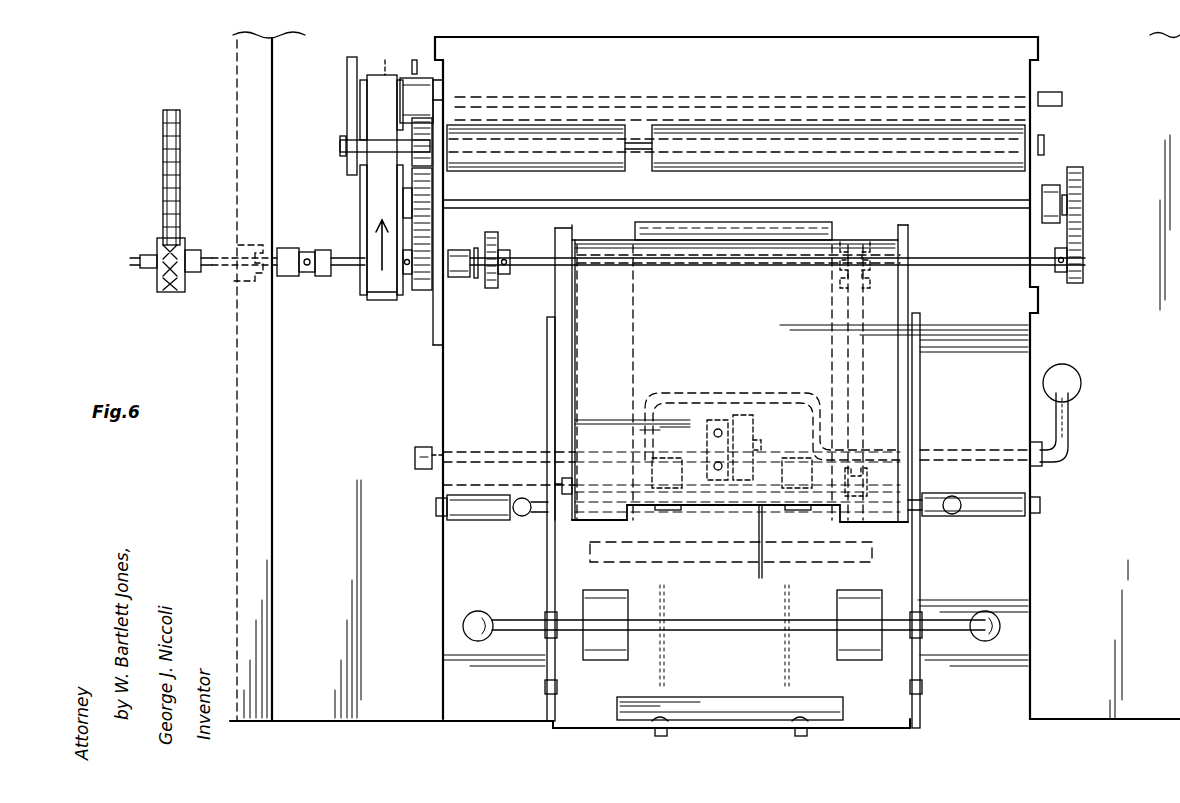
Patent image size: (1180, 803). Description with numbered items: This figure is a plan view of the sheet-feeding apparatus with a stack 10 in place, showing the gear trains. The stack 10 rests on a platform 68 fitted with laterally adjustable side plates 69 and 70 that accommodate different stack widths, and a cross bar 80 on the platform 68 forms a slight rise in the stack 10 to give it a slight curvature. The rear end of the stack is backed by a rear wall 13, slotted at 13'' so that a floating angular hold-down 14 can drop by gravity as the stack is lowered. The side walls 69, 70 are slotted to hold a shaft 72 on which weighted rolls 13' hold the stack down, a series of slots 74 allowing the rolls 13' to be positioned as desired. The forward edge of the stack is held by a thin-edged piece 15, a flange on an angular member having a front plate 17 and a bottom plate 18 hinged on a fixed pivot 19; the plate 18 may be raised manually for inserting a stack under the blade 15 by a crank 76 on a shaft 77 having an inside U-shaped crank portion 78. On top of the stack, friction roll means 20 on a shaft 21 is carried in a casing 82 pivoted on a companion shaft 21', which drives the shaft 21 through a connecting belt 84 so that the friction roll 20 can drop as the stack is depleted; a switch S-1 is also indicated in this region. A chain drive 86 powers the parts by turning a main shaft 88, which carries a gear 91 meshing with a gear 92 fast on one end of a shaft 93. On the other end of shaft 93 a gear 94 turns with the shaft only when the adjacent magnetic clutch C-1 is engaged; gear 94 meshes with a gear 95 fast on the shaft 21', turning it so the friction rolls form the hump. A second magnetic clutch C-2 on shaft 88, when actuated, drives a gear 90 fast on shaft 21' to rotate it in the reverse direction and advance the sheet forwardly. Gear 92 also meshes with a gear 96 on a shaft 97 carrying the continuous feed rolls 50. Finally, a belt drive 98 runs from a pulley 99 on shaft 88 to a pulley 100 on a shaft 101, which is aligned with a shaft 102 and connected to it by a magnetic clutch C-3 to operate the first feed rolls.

The stack 10 is at (905, 600).
The rear wall 13 is at (731, 742).
The weighted rolls 13' is at (733, 611).
The slot 13'' is at (734, 736).
The floating angular member 14 is at (727, 704).
The thin-edged piece 15 is at (802, 236).
The front plate 17 is at (777, 222).
The bottom plate 18 is at (632, 361).
The fixed pivot 19 is at (1040, 503).
The friction roll means 20 is at (790, 458).
The shaft 21 is at (495, 483).
The companion shaft 21' is at (777, 280).
The continuous feed rolls 50 is at (740, 160).
The platform 68 is at (1020, 553).
The side plate 69 is at (921, 556).
The side plate 70 is at (535, 519).
The shaft 72 is at (748, 623).
The series of slots 74 is at (546, 613).
The crank 76 is at (1069, 410).
The shaft 77 is at (962, 453).
The U-shaped crank portion 78 is at (724, 393).
The cross bar 80 is at (715, 566).
The casing 82 is at (888, 408).
The connecting belt 84 is at (862, 370).
The chain 86 is at (163, 163).
The main shaft 88 is at (340, 254).
The gear 90 is at (498, 243).
The gear 91 is at (421, 292).
The gear 92 is at (432, 192).
The shaft 93 is at (545, 178).
The gear 94 is at (1083, 182).
The gear 95 is at (1085, 260).
The gear 96 is at (430, 129).
The shaft 97 is at (640, 160).
The belt drive 98 is at (382, 300).
The pulley 99 is at (362, 294).
The pulley 100 is at (413, 60).
The shaft 101 is at (385, 60).
The shaft 102 is at (593, 97).
The magnetic clutch C-1 is at (1052, 184).
The magnetic clutch C-2 is at (460, 250).
The magnetic clutch C-3 is at (420, 80).
The switch S-1 is at (764, 526).